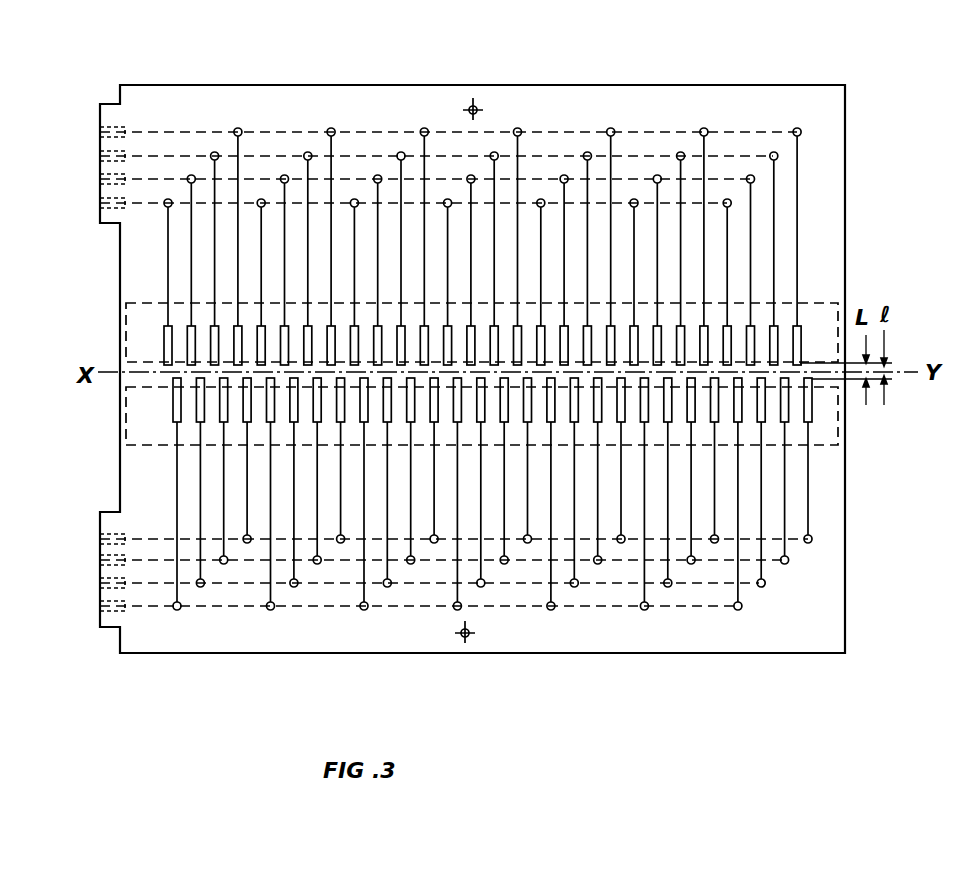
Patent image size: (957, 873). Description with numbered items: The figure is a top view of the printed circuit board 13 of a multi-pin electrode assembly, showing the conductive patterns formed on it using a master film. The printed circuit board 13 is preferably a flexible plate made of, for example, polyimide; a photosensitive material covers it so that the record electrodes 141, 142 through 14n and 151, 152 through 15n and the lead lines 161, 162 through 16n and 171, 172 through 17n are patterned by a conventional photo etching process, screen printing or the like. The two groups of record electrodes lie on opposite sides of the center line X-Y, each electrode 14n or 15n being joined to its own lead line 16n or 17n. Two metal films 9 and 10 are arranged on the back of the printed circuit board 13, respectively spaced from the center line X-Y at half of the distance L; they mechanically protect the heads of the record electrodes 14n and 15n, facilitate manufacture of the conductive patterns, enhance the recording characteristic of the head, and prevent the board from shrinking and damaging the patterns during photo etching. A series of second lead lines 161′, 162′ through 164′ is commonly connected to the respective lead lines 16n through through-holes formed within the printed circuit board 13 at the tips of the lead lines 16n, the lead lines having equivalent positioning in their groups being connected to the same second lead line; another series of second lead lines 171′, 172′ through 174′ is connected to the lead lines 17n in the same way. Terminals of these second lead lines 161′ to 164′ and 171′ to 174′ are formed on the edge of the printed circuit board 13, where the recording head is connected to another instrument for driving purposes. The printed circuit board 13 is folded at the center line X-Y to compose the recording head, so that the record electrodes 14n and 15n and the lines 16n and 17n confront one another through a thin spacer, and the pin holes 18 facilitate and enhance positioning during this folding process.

The metal film 9 is at (838, 315).
The metal film 10 is at (823, 447).
The printed circuit board 13 is at (766, 103).
The pin hole 18 is at (477, 108).
The record electrode 141 is at (164, 348).
The record electrode 142 is at (188, 330).
The record electrode 14n is at (800, 337).
The record electrode 151 is at (175, 413).
The record electrode 152 is at (198, 418).
The record electrode 15n is at (813, 403).
The lead line 161 is at (168, 279).
The lead line 162 is at (190, 233).
The lead line 16n is at (798, 187).
The lead line 171 is at (177, 481).
The lead line 172 is at (202, 525).
The lead line 17n is at (809, 510).
The second lead line 161′ is at (565, 130).
The second lead line 162′ is at (660, 156).
The second lead line 164′ is at (712, 203).
The second lead line 171′ is at (590, 608).
The second lead line 172′ is at (618, 583).
The second lead line 174′ is at (768, 538).